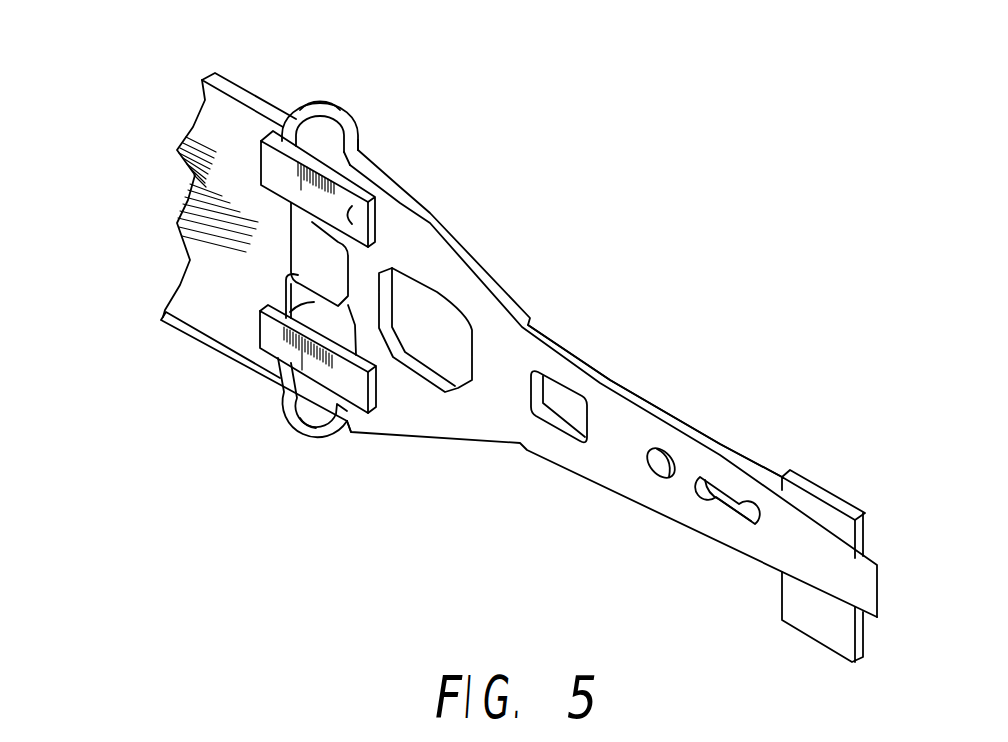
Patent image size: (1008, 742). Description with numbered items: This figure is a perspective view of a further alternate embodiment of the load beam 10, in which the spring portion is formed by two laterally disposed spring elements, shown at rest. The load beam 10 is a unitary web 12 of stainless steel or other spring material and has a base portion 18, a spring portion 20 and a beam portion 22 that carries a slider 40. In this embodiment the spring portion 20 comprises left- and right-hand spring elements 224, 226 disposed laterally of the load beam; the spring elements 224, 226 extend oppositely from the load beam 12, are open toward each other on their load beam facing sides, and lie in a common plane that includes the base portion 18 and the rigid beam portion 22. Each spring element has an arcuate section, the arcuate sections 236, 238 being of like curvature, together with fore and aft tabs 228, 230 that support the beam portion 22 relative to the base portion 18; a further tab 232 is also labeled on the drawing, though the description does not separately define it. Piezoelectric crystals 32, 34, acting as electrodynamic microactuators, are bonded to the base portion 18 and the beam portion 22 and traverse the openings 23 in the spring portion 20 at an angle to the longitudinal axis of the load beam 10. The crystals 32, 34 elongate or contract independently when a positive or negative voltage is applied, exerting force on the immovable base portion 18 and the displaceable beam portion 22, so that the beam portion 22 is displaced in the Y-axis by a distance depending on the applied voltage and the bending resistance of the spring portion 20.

The load beam 10 is at (138, 160).
The unitary web 12 is at (633, 507).
The base portion 18 is at (197, 305).
The spring portion 20 is at (350, 130).
The beam portion 22 is at (598, 388).
The openings 23 is at (313, 207).
The piezoelectric crystal 32 is at (280, 340).
The piezoelectric crystal 34 is at (380, 236).
The slider 40 is at (820, 490).
The left-hand spring element 224 is at (326, 441).
The right-hand spring element 226 is at (353, 130).
The fore tab 228 is at (350, 160).
The aft tab 230 is at (290, 114).
The lower back rail 232 is at (275, 405).
The arcuate section 236 is at (312, 443).
The arcuate section 238 is at (332, 130).